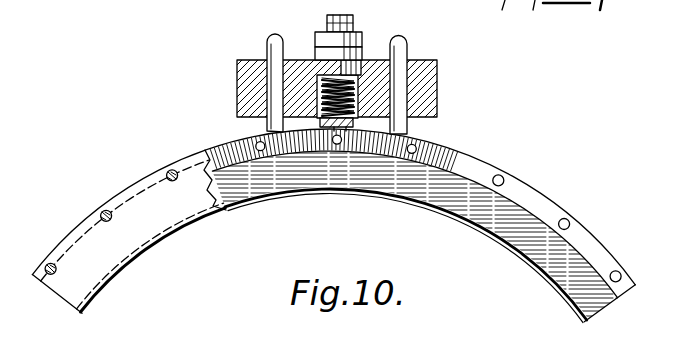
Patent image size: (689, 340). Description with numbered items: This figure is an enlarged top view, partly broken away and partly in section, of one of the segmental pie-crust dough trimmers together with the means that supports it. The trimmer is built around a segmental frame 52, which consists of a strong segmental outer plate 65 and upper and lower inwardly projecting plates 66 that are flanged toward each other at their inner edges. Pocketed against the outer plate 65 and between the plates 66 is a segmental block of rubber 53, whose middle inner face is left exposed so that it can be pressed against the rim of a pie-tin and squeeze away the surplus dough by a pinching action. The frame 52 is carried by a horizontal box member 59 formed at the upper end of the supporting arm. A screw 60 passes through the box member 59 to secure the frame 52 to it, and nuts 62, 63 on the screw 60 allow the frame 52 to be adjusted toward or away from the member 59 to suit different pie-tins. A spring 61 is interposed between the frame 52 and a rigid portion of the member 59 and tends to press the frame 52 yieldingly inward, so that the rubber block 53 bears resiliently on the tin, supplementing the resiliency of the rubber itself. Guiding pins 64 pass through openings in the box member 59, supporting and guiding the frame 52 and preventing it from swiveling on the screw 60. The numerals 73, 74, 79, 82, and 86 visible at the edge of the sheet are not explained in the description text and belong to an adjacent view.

The segmental frame 52 is at (195, 151).
The segmental block of rubber 53 is at (502, 211).
The horizontal box member 59 is at (438, 90).
The screw 60 is at (353, 15).
The spring 61 is at (377, 60).
The nut 62 is at (321, 33).
The nut 63 is at (326, 50).
The guiding pin 64 is at (272, 44).
The segmental outer plate 65 is at (555, 210).
The inwardly projecting plate 66 is at (292, 197).
The partial numeral (adjacent figure) 73 is at (477, 6).
The partial numeral (adjacent figure) 74 is at (507, 18).
The partial numeral (adjacent figure) 79 is at (630, 8).
The partial numeral (adjacent figure) 82 is at (542, 18).
The partial numeral (adjacent figure) 86 is at (580, 19).